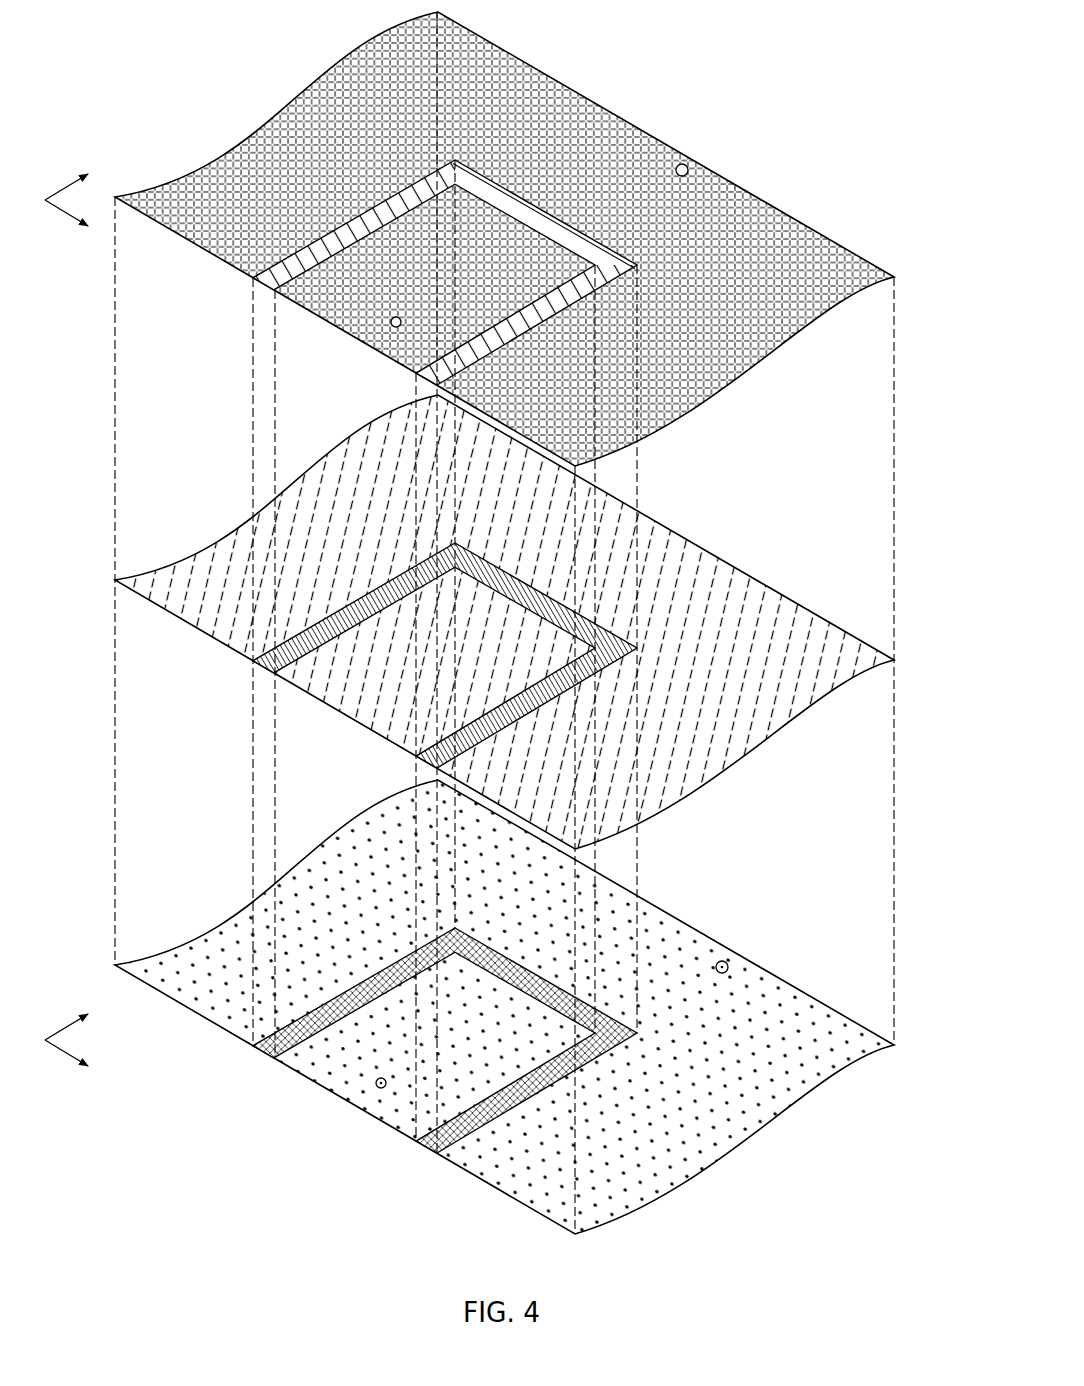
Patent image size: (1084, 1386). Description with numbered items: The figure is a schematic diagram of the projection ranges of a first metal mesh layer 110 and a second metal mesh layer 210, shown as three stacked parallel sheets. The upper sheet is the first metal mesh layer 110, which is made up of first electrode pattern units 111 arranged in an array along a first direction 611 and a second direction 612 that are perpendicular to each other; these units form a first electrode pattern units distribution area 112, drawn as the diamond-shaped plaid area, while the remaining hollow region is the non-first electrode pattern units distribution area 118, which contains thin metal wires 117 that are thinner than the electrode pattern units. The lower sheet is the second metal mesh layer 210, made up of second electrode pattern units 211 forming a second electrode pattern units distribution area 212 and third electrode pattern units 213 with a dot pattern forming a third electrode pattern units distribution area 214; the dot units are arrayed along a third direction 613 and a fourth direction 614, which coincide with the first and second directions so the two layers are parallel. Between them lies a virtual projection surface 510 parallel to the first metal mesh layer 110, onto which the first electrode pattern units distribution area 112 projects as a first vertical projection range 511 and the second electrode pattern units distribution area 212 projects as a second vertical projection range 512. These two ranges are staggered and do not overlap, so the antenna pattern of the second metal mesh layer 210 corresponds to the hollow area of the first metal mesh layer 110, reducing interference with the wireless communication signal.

The first metal mesh layer 110 is at (852, 243).
The first electrode pattern units 111 is at (686, 164).
The first electrode pattern units distribution area 112 is at (757, 218).
The thin metal wires 117 is at (252, 280).
The non-first electrode pattern units distribution area 118 is at (306, 268).
The second metal mesh layer 210 is at (538, 1007).
The second electrode pattern units 211 is at (445, 1093).
The second electrode pattern units distribution area 212 is at (445, 1040).
The third electrode pattern units 213 is at (577, 1042).
The third electrode pattern units distribution area 214 is at (504, 1007).
The virtual projection surface 510 is at (538, 622).
The first vertical projection range 511 is at (504, 622).
The second vertical projection range 512 is at (445, 655).
The first direction 611 is at (80, 230).
The second direction 612 is at (80, 172).
The third direction 613 is at (80, 1069).
The fourth direction 614 is at (80, 1012).